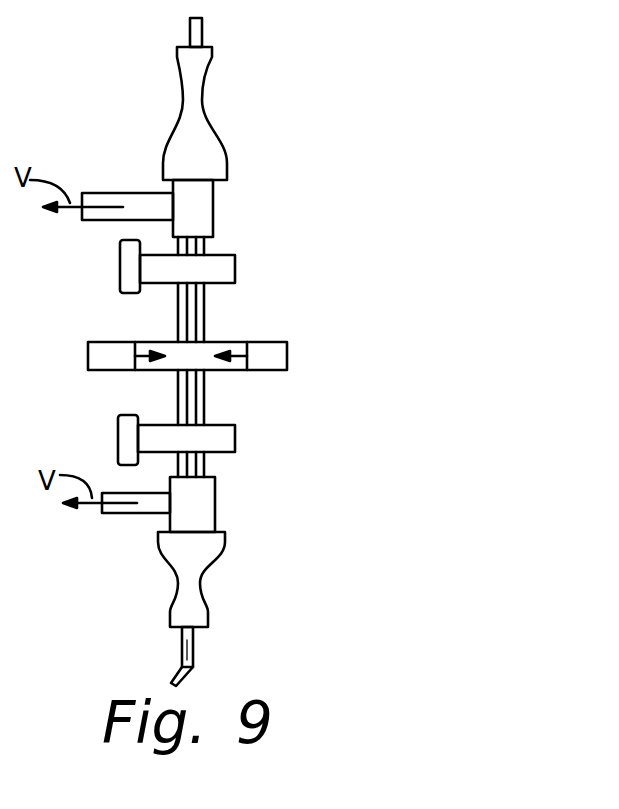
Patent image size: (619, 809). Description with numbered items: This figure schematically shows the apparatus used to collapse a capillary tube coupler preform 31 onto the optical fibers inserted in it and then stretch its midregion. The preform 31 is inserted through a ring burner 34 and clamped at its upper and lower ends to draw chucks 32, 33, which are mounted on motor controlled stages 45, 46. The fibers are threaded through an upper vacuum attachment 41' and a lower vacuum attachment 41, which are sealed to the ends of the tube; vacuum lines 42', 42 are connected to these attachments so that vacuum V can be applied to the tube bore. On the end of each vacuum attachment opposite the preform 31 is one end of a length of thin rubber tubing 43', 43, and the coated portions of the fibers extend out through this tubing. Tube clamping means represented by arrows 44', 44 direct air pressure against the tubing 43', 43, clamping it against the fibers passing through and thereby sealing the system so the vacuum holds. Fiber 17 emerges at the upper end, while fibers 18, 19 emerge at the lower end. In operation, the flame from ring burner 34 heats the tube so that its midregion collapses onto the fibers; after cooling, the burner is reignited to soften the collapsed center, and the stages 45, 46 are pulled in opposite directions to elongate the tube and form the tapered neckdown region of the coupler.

The fiber 17 is at (215, 25).
The tubing 43' is at (221, 113).
The tube clamping means 44' is at (190, 86).
The upper vacuum attachment 41' is at (225, 208).
The vacuum line 42' is at (127, 186).
The motor controlled stage 45 is at (123, 238).
The draw chuck 32 is at (227, 267).
The preform 31 is at (219, 397).
The ring burner 34 is at (268, 342).
The motor controlled stage 46 is at (127, 413).
The draw chuck 33 is at (230, 435).
The vacuum attachment 41 is at (219, 504).
The vacuum line 42 is at (135, 529).
The tubing 43 is at (217, 579).
The tube clamping means 44 is at (183, 601).
The fiber 18 is at (166, 663).
The fiber 19 is at (209, 655).